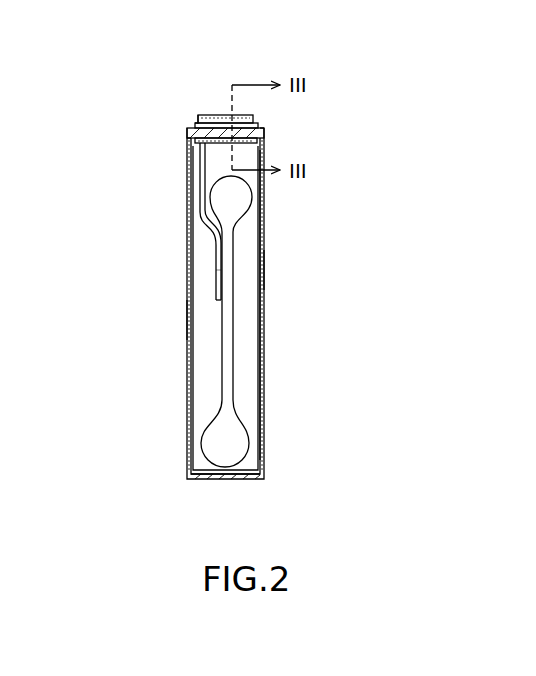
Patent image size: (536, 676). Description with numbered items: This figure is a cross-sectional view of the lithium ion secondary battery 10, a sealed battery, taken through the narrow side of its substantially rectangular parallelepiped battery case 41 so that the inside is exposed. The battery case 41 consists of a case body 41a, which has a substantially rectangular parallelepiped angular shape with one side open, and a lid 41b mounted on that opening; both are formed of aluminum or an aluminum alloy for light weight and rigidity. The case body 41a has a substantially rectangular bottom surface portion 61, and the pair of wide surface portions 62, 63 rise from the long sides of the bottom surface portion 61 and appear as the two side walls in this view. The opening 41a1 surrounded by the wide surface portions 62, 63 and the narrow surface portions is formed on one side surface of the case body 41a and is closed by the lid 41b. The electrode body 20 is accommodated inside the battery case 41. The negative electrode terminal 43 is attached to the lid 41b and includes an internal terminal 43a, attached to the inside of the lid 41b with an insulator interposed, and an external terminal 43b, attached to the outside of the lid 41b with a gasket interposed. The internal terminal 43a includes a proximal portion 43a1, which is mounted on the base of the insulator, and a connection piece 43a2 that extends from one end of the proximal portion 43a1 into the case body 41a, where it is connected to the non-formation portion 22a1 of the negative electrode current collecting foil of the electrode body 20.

The lithium ion secondary battery 10 is at (330, 83).
The electrode body 20 is at (190, 398).
The non-formation portion of the negative electrode current collecting foil 22a1 is at (234, 321).
The battery case 41 is at (170, 148).
The case body 41a is at (267, 201).
The opening 41a1 is at (200, 114).
The lid 41b is at (262, 129).
The negative electrode terminal 43 is at (212, 98).
The internal terminal 43a is at (210, 247).
The proximal portion 43a1 is at (257, 146).
The connection piece 43a2 is at (216, 277).
The external terminal 43b is at (190, 122).
The bottom surface portion 61 is at (225, 480).
The wide surface portion 62 is at (186, 323).
The wide surface portion 63 is at (265, 274).